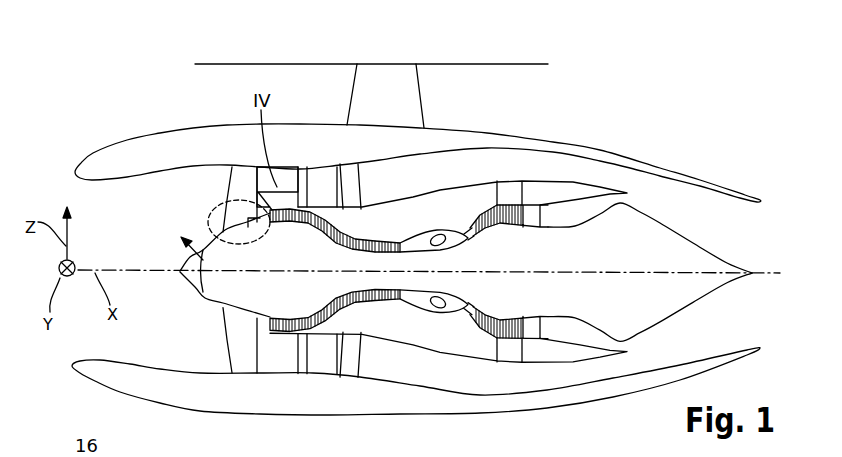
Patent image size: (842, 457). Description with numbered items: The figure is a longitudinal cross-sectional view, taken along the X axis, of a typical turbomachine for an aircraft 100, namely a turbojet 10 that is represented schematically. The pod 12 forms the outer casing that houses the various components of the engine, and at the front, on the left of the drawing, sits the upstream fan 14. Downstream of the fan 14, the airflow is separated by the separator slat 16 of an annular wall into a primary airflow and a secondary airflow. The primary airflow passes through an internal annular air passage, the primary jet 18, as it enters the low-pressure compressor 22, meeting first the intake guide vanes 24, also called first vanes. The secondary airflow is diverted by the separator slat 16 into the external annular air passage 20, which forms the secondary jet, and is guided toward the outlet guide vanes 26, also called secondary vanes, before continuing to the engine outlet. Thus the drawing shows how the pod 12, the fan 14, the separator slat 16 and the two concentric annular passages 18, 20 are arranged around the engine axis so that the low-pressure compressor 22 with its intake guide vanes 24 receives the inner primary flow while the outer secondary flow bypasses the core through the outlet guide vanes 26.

The aircraft 100 is at (257, 64).
The turbojet 10 is at (477, 113).
The pod 12 is at (316, 118).
The upstream fan 14 is at (224, 204).
The separator slat 16 is at (264, 202).
The primary jet 18 is at (280, 225).
The external annular air passage 20 is at (287, 180).
The low-pressure compressor 22 is at (299, 223).
The intake guide vanes 24 is at (253, 230).
The outlet guide vanes 26 is at (354, 187).